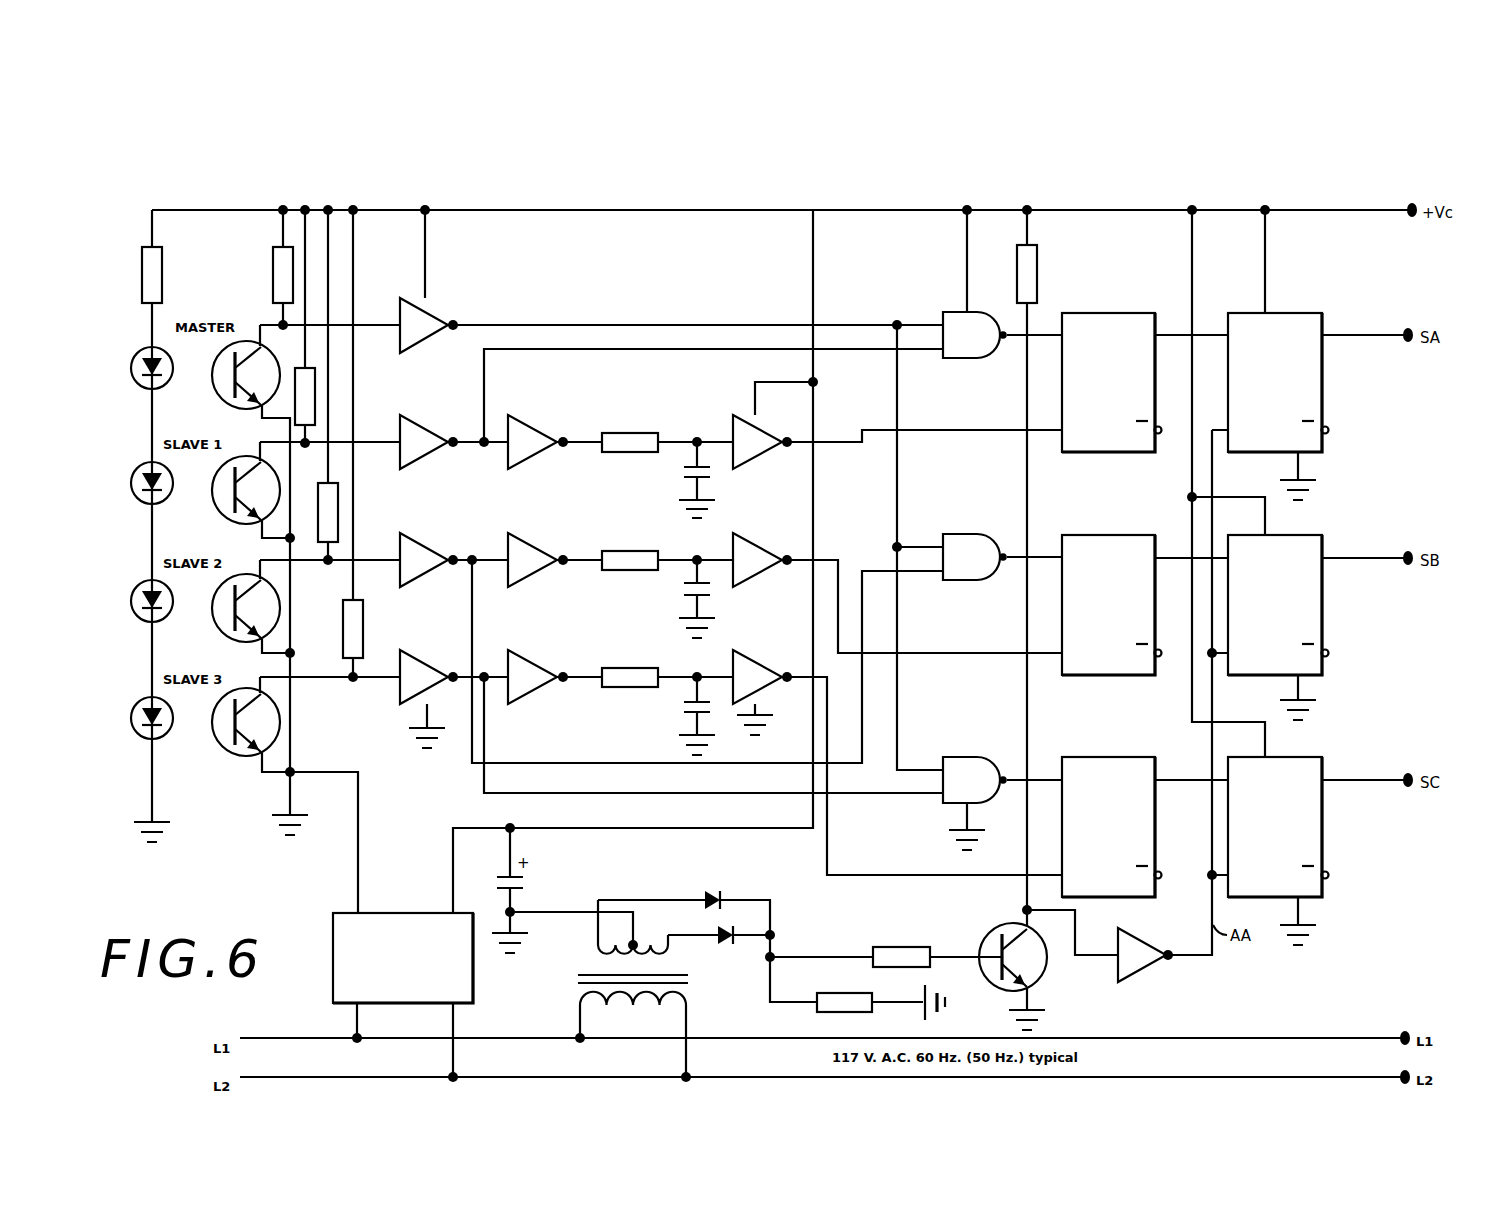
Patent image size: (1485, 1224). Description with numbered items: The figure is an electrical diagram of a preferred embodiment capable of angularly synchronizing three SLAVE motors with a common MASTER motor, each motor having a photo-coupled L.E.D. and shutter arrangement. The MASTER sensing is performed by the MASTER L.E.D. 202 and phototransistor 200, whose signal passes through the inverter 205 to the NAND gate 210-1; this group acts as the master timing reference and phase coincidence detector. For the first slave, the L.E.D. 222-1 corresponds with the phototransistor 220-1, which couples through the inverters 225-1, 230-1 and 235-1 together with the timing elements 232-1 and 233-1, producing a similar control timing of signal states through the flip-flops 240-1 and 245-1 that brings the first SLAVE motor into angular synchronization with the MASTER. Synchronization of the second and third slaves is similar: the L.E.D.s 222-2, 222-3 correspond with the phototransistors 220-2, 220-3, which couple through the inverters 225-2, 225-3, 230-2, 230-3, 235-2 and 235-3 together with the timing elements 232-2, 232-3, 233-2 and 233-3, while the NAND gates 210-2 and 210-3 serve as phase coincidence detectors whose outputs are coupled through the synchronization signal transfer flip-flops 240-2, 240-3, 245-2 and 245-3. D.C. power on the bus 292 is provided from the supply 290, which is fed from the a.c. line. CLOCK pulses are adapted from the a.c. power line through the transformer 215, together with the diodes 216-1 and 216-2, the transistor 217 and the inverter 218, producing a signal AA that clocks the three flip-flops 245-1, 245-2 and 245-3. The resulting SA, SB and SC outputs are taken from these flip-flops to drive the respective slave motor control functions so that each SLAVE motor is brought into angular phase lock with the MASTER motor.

The phototransistor 200 is at (246, 340).
The L.E.D. 202 is at (136, 355).
The inverter 205 is at (432, 320).
The NAND gate 210-1 is at (957, 325).
The NAND gate 210-2 is at (965, 548).
The NAND gate 210-3 is at (957, 768).
The transformer 215 is at (586, 977).
The diode 216-1 is at (722, 897).
The diode 216-2 is at (737, 930).
The transistor 217 is at (982, 945).
The inverter 218 is at (1135, 968).
The phototransistor 220-1 is at (226, 514).
The phototransistor 220-2 is at (226, 632).
The phototransistor 220-3 is at (226, 750).
The L.E.D. 222-1 is at (140, 510).
The L.E.D. 222-2 is at (140, 620).
The L.E.D. 222-3 is at (140, 738).
The inverter 225-1 is at (425, 436).
The inverter 225-2 is at (425, 554).
The inverter 225-3 is at (425, 671).
The inverter 230-1 is at (545, 436).
The inverter 230-2 is at (545, 554).
The inverter 230-3 is at (538, 671).
The timing element 232-1 is at (628, 442).
The timing element 232-2 is at (650, 543).
The timing element 232-3 is at (628, 677).
The timing element 233-1 is at (690, 486).
The timing element 233-2 is at (688, 598).
The timing element 233-3 is at (688, 715).
The inverter 235-1 is at (758, 460).
The inverter 235-2 is at (758, 578).
The inverter 235-3 is at (770, 690).
The flip-flop 240-1 is at (1112, 330).
The flip-flop 240-2 is at (1108, 548).
The flip-flop 240-3 is at (1085, 770).
The flip-flop 245-1 is at (1287, 330).
The flip-flop 245-2 is at (1290, 556).
The flip-flop 245-3 is at (1290, 772).
The supply 290 is at (402, 930).
The bus 292 is at (658, 212).